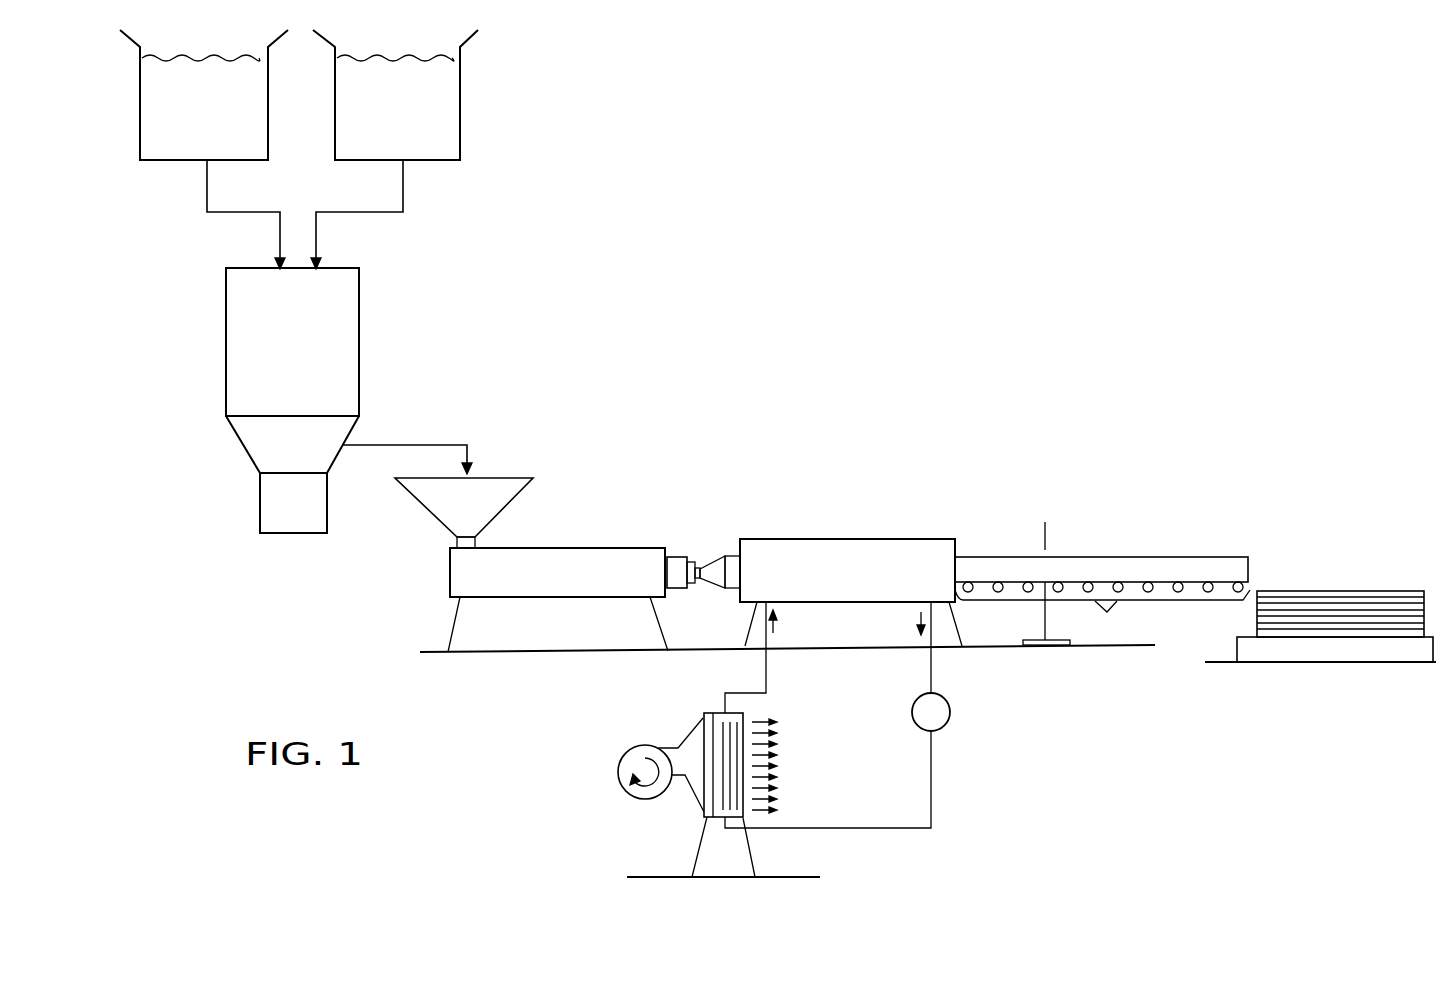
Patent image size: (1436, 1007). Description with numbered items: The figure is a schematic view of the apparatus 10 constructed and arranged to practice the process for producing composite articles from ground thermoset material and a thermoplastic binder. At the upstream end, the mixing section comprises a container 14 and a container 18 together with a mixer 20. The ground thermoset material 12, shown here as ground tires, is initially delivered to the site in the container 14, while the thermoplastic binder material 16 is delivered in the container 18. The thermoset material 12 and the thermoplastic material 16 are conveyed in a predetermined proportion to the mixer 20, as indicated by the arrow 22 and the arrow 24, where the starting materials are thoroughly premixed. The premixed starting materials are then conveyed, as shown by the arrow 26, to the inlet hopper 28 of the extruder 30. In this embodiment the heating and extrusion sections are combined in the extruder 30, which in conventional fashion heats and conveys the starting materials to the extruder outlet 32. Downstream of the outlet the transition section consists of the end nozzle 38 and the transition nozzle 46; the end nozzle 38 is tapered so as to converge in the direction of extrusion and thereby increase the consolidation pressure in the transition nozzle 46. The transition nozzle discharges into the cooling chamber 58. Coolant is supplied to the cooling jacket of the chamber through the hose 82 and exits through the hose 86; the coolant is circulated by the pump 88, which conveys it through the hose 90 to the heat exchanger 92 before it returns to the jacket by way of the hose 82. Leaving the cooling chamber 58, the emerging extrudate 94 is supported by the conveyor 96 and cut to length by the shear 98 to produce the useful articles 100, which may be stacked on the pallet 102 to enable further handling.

The apparatus 10 is at (699, 324).
The ground thermoset material 12 is at (452, 88).
The container 14 is at (460, 130).
The thermoplastic binder material 16 is at (148, 110).
The container 18 is at (140, 152).
The mixer 20 is at (359, 298).
The arrow 22 is at (403, 189).
The arrow 24 is at (207, 190).
The arrow 26 is at (416, 445).
The inlet hopper 28 is at (495, 480).
The extruder 30 is at (598, 548).
The extruder outlet 32 is at (672, 557).
The end nozzle 38 is at (677, 565).
The transition nozzle 46 is at (728, 560).
The cooling chamber 58 is at (878, 539).
The hose 82 is at (768, 681).
The hose 86 is at (933, 670).
The pump 88 is at (949, 716).
The hose 90 is at (848, 826).
The heat exchanger 92 is at (680, 770).
The emerging extrudate 94 is at (987, 560).
The conveyor 96 is at (1110, 620).
The shear 98 is at (1045, 535).
The useful articles 100 is at (1338, 615).
The pallet 102 is at (1380, 652).